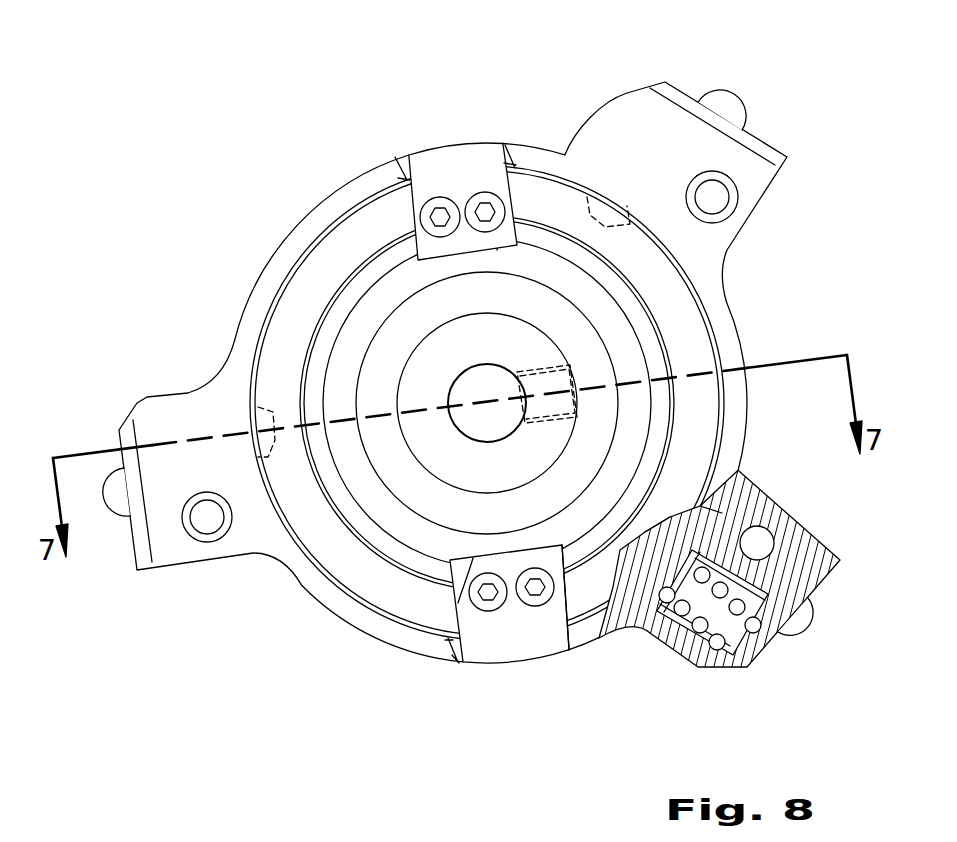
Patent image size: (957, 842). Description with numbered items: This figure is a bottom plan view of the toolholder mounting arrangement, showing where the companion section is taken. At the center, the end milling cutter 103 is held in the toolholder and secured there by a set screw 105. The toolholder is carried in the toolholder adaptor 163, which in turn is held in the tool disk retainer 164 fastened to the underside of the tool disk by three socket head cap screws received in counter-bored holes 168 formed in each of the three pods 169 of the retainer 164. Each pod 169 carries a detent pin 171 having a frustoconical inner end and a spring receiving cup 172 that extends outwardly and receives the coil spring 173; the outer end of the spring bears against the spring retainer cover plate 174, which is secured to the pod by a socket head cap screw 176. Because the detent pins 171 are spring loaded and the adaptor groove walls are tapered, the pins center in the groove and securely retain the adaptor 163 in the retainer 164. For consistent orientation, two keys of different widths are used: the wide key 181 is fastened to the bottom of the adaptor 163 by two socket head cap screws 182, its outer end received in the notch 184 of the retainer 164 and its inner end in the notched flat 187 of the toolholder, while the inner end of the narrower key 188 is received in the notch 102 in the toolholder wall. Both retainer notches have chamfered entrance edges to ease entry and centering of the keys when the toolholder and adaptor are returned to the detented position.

The notch 102 is at (512, 216).
The end milling cutter 103 is at (318, 598).
The set screw 105 is at (575, 370).
The toolholder adaptor 163 is at (393, 593).
The tool disk retainer 164 is at (735, 428).
The counter-bored holes 168 is at (207, 528).
The pods 169 is at (758, 178).
The detent pin 171 is at (738, 470).
The spring receiving cup 172 is at (733, 523).
The coil spring 173 is at (757, 650).
The spring retainer cover plate 174 is at (828, 580).
The socket head cap screw 176 is at (738, 95).
The wide key 181 is at (508, 652).
The socket head cap screws 182 is at (498, 607).
The notch 184 is at (450, 656).
The notched flat 187 is at (457, 590).
The key 188 is at (470, 155).